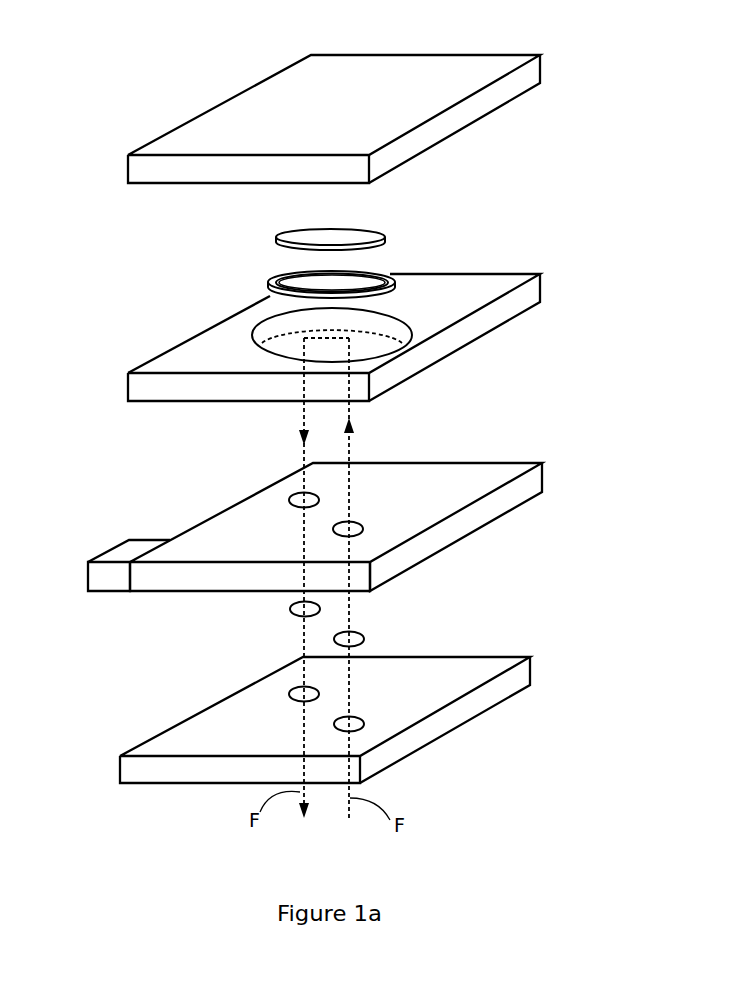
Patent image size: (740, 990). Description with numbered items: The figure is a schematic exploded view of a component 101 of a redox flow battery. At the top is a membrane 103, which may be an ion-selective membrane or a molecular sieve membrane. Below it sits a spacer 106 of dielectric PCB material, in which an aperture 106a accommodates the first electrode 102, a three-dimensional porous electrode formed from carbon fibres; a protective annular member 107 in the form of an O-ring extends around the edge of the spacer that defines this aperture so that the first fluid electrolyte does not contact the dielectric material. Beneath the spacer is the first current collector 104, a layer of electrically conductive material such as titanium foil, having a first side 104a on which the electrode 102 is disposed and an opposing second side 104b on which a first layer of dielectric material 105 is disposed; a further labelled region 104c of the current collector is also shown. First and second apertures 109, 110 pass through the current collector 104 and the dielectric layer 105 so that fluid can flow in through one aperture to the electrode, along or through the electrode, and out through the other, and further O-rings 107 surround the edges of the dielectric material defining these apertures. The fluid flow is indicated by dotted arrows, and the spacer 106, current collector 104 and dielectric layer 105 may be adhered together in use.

The component of a redox flow battery 101 is at (111, 827).
The first electrode 102 is at (375, 229).
The membrane 103 is at (490, 55).
The first current collector 104 is at (308, 510).
The first side of the first current collector 104a is at (492, 463).
The second side of the first current collector 104b is at (470, 533).
The tab of middle plate 104c is at (123, 552).
The first layer of dielectric material 105 is at (520, 677).
The spacer 106 is at (336, 315).
The aperture 106a is at (282, 317).
The protective annular member 107 is at (280, 279).
The first aperture 109 is at (363, 532).
The second aperture 110 is at (293, 493).